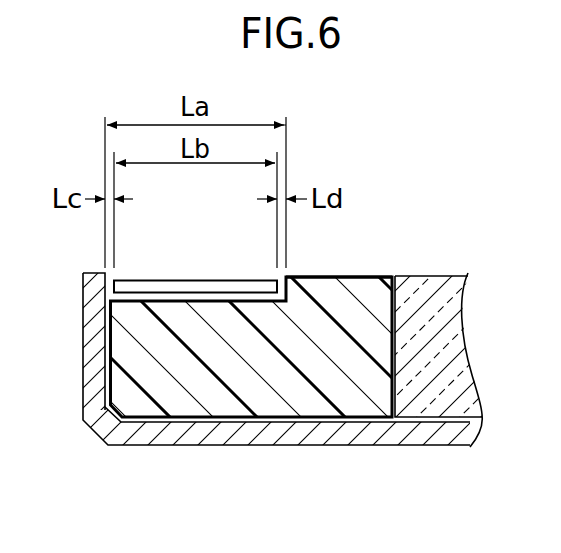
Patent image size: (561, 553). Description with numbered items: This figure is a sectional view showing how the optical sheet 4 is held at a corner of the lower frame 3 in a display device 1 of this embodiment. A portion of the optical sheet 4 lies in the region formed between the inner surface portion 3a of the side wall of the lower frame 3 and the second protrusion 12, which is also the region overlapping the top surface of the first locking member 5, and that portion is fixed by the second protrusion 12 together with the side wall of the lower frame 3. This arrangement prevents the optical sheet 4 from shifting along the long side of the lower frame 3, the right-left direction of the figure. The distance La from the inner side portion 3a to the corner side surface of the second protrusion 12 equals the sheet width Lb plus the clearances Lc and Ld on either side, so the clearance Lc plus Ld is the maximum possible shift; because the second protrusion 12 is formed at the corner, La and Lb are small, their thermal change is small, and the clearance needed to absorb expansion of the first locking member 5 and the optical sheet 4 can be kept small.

The base member / substrate 1 is at (433, 398).
The lower frame 3 is at (195, 437).
The inner surface portion of the side wall 3a is at (100, 282).
The optical sheet 4 is at (235, 288).
The first locking member 5 is at (307, 397).
The second protrusion 12 is at (362, 276).